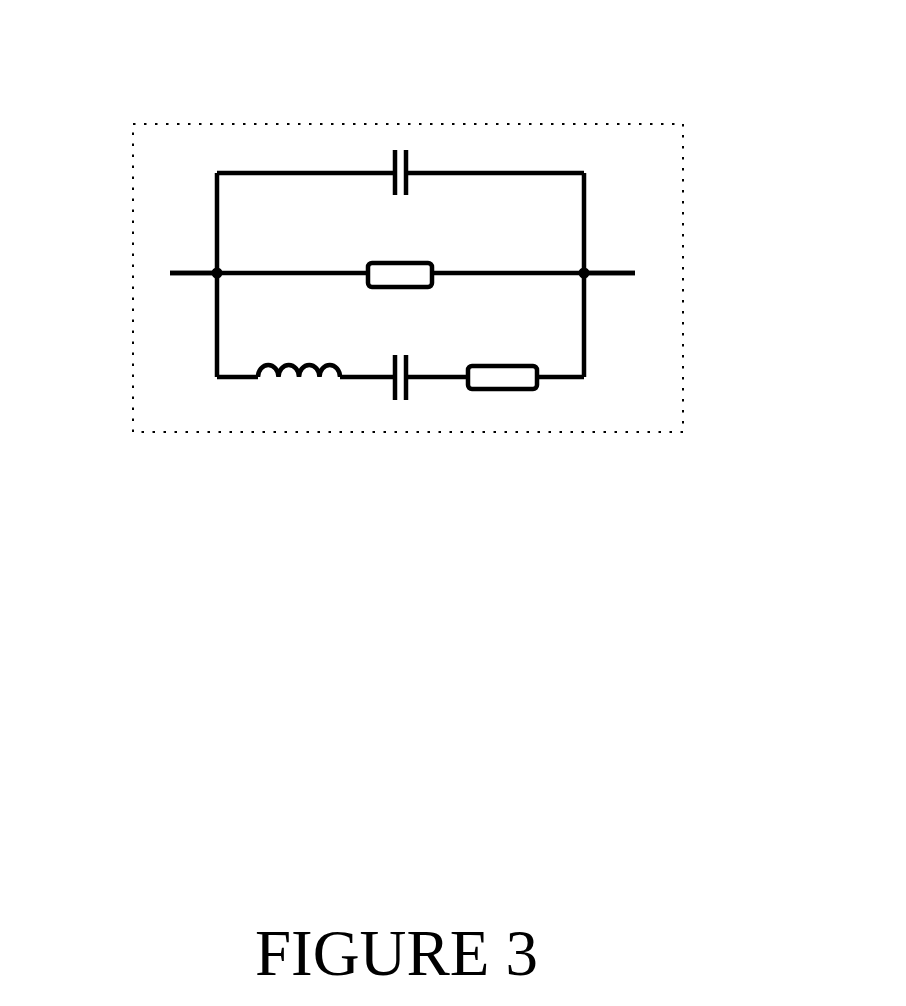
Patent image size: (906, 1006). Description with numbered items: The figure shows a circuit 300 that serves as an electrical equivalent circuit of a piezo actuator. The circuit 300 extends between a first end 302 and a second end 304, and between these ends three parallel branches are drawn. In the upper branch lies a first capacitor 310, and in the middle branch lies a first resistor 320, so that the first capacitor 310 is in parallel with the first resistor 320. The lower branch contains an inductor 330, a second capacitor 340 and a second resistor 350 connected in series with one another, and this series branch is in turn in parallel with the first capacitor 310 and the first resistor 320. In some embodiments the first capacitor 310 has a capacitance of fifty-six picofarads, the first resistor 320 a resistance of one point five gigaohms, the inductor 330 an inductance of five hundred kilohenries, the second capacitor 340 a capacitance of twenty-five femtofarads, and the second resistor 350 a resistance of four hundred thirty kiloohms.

The circuit 300 is at (498, 124).
The first end of circuit 302 is at (176, 274).
The second end of circuit 304 is at (630, 274).
The first capacitor 310 is at (395, 150).
The first resistor 320 is at (368, 265).
The inductor 330 is at (280, 380).
The second capacitor 340 is at (395, 400).
The second resistor 350 is at (497, 390).